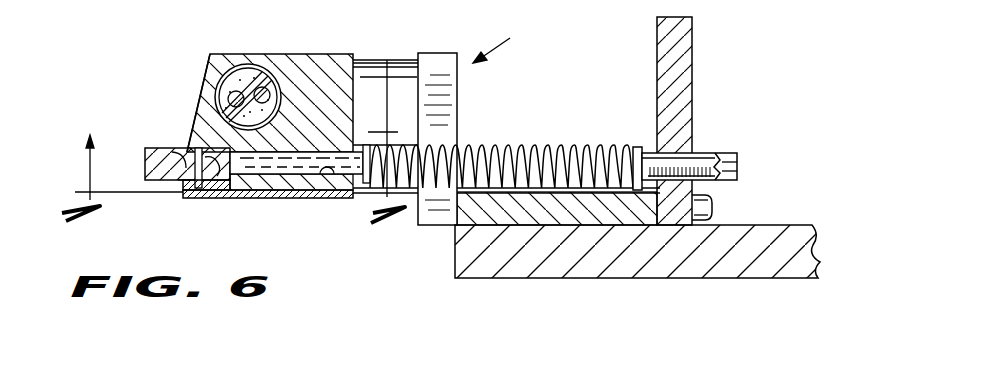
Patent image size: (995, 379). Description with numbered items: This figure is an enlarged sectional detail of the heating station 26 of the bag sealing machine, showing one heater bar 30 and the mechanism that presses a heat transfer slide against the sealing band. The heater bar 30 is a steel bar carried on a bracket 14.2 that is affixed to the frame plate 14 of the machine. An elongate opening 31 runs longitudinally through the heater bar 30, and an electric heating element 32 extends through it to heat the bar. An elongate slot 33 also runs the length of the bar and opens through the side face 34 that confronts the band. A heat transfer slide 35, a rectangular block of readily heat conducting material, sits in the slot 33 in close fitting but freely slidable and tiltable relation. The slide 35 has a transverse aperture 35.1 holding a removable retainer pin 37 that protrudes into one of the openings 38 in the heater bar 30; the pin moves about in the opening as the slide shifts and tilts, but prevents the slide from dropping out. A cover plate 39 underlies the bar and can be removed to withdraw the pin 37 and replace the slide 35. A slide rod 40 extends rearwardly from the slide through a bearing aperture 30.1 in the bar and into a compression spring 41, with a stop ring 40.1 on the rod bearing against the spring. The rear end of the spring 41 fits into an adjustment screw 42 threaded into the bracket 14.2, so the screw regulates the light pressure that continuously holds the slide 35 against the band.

The frame plate 14 is at (507, 268).
The bracket 14.2 is at (680, 84).
The heating station 26 is at (507, 40).
The heater bar 30 is at (330, 62).
The bearing aperture 30.1 is at (329, 193).
The elongate opening 31 is at (261, 67).
The electric heating element 32 is at (208, 78).
The elongate slot 33 is at (172, 150).
The side face 34 is at (200, 100).
The heat transfer slide 35 is at (145, 168).
The aperture 35.1 is at (185, 172).
The retainer pin 37 is at (222, 184).
The opening 38 is at (227, 188).
The cover plate 39 is at (278, 199).
The slide rod 40 is at (317, 140).
The stop ring 40.1 is at (370, 143).
The compression spring 41 is at (482, 148).
The adjustment screw 42 is at (648, 147).